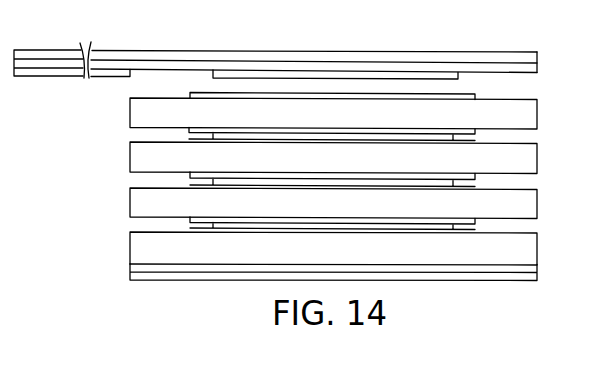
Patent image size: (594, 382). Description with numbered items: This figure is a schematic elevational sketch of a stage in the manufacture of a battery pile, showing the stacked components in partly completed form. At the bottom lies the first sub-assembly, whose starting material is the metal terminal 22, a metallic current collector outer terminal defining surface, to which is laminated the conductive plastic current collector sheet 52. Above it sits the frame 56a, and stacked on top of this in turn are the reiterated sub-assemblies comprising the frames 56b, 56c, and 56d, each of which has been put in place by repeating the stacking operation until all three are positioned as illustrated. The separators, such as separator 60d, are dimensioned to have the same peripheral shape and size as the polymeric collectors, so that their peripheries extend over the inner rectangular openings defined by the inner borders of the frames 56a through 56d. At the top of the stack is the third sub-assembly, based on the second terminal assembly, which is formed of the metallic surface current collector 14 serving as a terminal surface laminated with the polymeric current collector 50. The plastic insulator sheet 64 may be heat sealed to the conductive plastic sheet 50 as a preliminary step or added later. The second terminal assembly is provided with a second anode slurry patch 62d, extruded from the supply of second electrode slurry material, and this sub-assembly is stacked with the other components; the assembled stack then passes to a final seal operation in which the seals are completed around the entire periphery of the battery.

The metallic surface current collector 14 is at (413, 51).
The metallic current collector outer terminal defining surface 22 is at (217, 283).
The polymeric current collector 50 is at (538, 74).
The polymeric current collector 52 is at (217, 264).
The frame 56a is at (357, 270).
The frame 56b is at (585, 213).
The frame 56c is at (585, 166).
The frame 56d is at (585, 122).
The separator 60d is at (207, 92).
The second anode slurry patch 62d is at (365, 82).
The plastic insulator sheet 64 is at (50, 77).